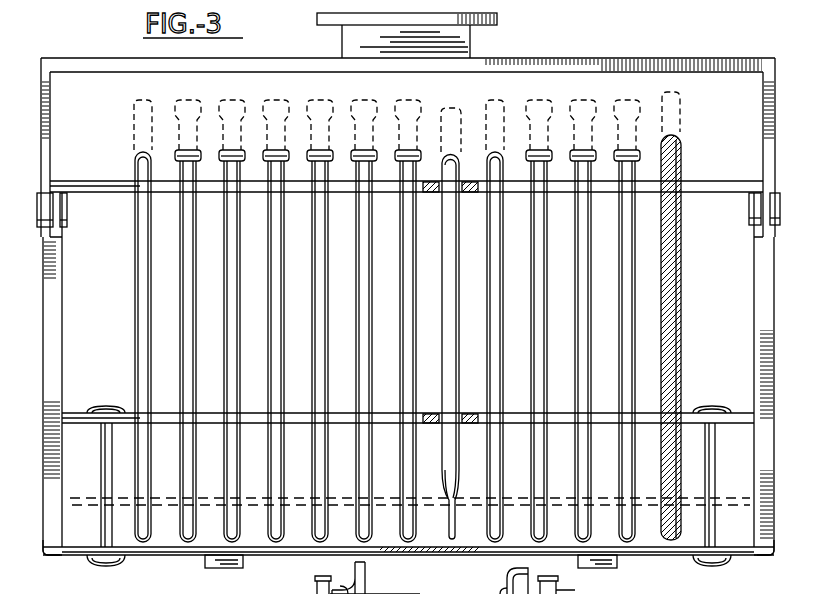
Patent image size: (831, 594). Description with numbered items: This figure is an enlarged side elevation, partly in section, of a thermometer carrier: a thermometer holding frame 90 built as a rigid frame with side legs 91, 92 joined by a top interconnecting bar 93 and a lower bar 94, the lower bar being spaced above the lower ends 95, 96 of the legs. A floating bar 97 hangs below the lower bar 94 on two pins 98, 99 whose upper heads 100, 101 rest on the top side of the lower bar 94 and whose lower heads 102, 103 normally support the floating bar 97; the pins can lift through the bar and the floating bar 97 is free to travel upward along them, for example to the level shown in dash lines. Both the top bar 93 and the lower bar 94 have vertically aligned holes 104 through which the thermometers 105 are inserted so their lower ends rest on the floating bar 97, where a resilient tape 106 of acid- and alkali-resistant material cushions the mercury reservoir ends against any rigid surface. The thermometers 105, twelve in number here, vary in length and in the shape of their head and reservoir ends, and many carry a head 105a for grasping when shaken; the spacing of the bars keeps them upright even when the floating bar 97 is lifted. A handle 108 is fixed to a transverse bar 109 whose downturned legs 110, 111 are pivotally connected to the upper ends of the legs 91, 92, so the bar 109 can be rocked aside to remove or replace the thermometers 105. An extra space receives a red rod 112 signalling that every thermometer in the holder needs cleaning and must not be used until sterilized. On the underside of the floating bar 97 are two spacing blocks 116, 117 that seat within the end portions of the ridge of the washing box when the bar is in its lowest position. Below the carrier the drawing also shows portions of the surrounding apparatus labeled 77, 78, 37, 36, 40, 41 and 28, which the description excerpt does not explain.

The thermometer holding frame 90 is at (408, 132).
The side leg 91 is at (50, 292).
The side leg 92 is at (765, 302).
The top interconnecting bar 93 is at (105, 190).
The lower bar 94 is at (742, 415).
The lower end of side leg 95 is at (48, 558).
The lower end of side leg 96 is at (762, 558).
The floating bar 97 is at (180, 553).
The pin 98 is at (103, 468).
The pin 99 is at (712, 480).
The head 100 is at (112, 396).
The head 101 is at (714, 398).
The lower head 102 is at (108, 566).
The lower head 103 is at (700, 567).
The holes 104 is at (465, 194).
The thermometers 105 is at (141, 156).
The head 105a is at (188, 152).
The resilient tape 106 is at (437, 548).
The handle 108 is at (460, 38).
The transverse bar 109 is at (537, 68).
The downturned leg 110 is at (50, 99).
The downturned leg 111 is at (765, 100).
The rod 112 is at (683, 155).
The spacing block 116 is at (208, 570).
The spacing block 117 is at (612, 567).
The inlet conduit 77 is at (317, 588).
The outlet conduit 78 is at (557, 590).
The supply pipe 37 is at (366, 571).
The drain pipe 36 is at (507, 584).
The pipe elbow 40 is at (505, 590).
The pipe elbow 41 is at (365, 587).
The manifold 28 is at (380, 586).